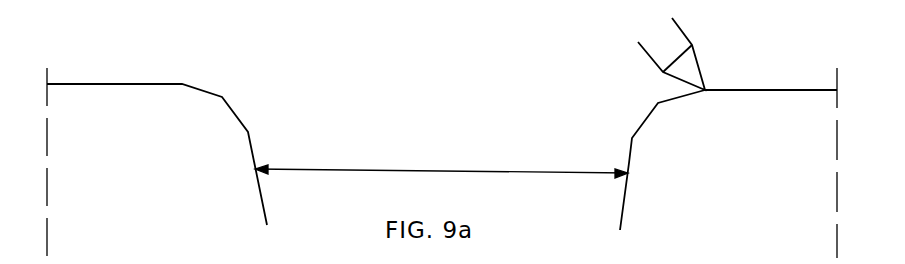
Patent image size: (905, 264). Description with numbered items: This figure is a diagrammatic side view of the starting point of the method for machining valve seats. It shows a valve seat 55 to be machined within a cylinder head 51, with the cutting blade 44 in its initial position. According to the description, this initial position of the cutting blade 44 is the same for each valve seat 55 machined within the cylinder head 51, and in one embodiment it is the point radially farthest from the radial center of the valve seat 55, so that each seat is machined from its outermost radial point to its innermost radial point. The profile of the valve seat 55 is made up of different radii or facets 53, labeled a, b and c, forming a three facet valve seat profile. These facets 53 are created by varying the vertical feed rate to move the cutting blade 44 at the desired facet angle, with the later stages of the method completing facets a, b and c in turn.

The cutting blade 44 is at (700, 63).
The cylinder head 51 is at (93, 92).
The facets 53 is at (672, 99).
The valve seat 55 is at (441, 161).